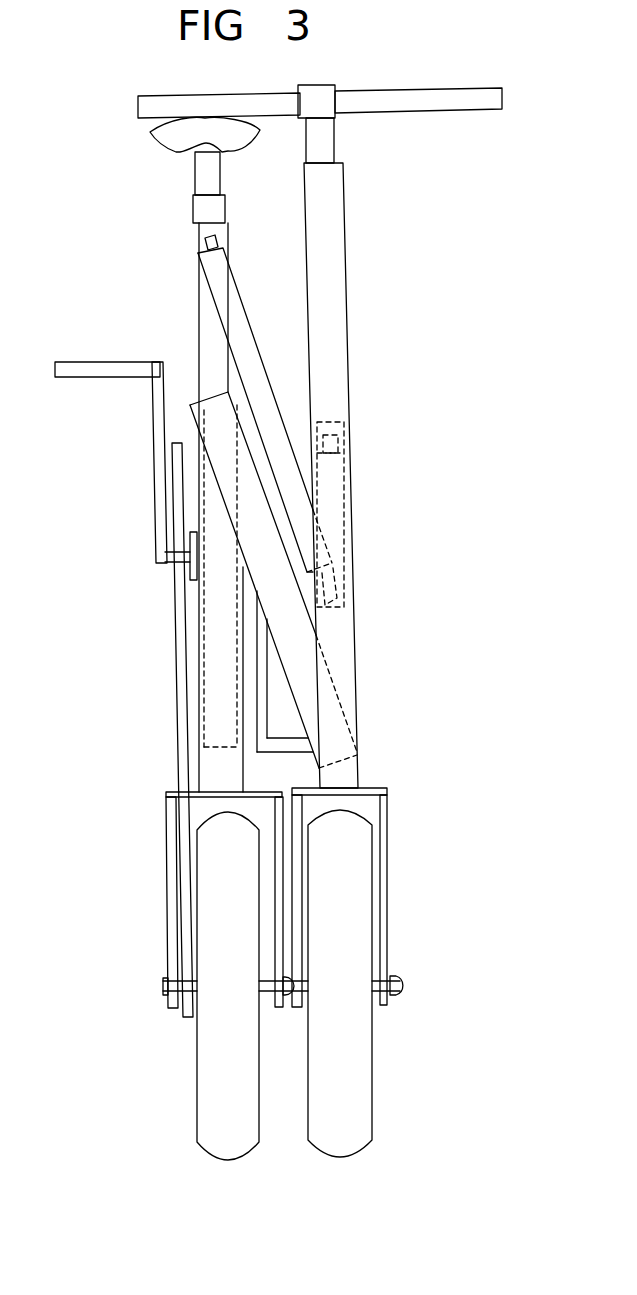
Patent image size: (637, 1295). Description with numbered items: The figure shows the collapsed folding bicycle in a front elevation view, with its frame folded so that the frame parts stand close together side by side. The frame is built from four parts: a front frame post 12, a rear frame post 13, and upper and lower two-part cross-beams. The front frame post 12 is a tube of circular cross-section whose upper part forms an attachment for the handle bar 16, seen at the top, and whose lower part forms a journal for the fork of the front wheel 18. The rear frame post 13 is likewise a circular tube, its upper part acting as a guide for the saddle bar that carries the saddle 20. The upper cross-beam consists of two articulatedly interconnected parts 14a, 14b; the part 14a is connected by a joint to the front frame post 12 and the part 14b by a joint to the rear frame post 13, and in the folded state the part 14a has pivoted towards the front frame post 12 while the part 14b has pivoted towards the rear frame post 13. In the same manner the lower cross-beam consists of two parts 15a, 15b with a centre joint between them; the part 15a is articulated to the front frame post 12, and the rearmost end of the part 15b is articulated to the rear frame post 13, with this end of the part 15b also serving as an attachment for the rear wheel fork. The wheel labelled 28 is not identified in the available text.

The front frame post 12 is at (330, 300).
The rear frame post 13 is at (205, 333).
The part of upper cross-beam 14a is at (345, 487).
The part of upper cross-beam 14b is at (350, 388).
The part of lower cross-beam 15a is at (298, 650).
The part of lower cross-beam 15b is at (170, 622).
The handle bar 16 is at (327, 145).
The front wheel 18 is at (350, 855).
The saddle 20 is at (146, 157).
The front wheel 28 is at (218, 878).